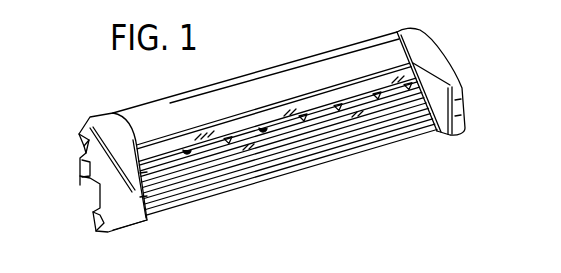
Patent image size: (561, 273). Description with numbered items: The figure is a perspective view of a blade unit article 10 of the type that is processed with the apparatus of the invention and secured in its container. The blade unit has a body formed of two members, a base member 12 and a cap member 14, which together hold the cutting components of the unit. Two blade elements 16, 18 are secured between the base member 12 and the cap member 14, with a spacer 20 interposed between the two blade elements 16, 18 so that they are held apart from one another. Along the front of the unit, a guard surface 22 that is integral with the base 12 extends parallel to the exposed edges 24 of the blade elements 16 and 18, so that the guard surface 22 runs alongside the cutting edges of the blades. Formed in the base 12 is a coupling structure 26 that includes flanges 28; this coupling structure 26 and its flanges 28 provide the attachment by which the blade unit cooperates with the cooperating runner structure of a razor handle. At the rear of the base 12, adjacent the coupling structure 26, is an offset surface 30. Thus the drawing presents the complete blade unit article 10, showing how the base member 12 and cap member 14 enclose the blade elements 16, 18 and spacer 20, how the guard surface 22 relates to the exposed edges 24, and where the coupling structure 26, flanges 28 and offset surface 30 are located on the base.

The blade unit article 10 is at (453, 57).
The base member 12 is at (108, 188).
The cap member 14 is at (180, 93).
The blade element 16 is at (321, 101).
The blade element 18 is at (318, 106).
The spacer 20 is at (298, 122).
The guard surface 22 is at (367, 152).
The exposed edges 24 is at (381, 99).
The coupling structure 26 is at (80, 185).
The flanges 28 is at (82, 169).
The offset surface 30 is at (78, 145).